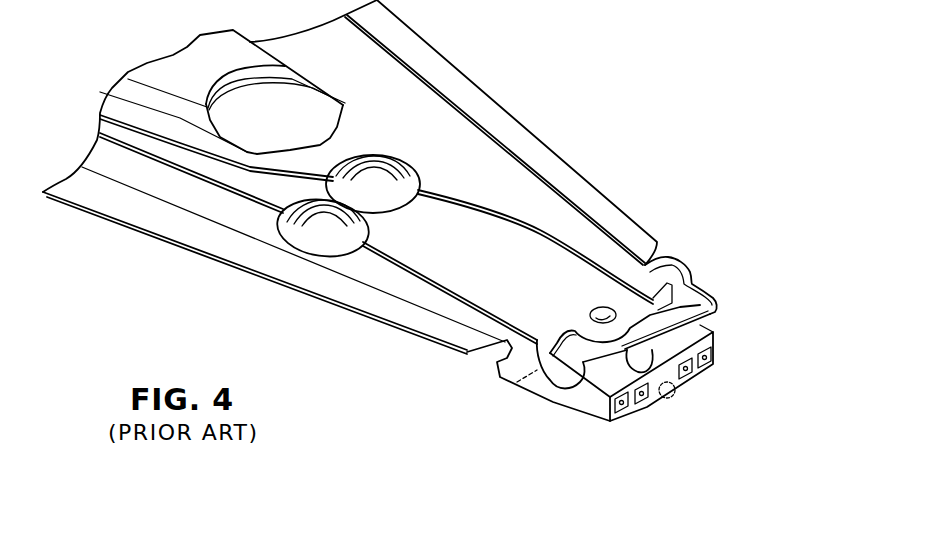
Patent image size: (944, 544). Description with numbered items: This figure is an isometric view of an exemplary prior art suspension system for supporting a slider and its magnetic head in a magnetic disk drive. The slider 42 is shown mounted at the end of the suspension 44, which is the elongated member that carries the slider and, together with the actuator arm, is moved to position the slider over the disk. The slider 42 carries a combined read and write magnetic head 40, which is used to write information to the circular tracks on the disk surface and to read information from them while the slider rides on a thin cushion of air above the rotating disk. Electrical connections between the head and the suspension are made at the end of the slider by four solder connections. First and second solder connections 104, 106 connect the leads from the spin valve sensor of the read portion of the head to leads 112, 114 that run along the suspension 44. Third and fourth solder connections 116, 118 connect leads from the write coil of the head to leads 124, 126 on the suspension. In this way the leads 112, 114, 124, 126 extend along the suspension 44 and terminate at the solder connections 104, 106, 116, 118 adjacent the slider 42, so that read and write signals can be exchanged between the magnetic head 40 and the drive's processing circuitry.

The magnetic head 40 is at (675, 399).
The slider 42 is at (557, 412).
The suspension 44 is at (520, 118).
The first solder connection 104 is at (613, 407).
The second solder connection 106 is at (706, 350).
The lead 112 is at (385, 262).
The lead 114 is at (573, 253).
The third solder connection 116 is at (634, 401).
The fourth solder connection 118 is at (693, 378).
The lead 124 is at (443, 283).
The lead 126 is at (496, 218).